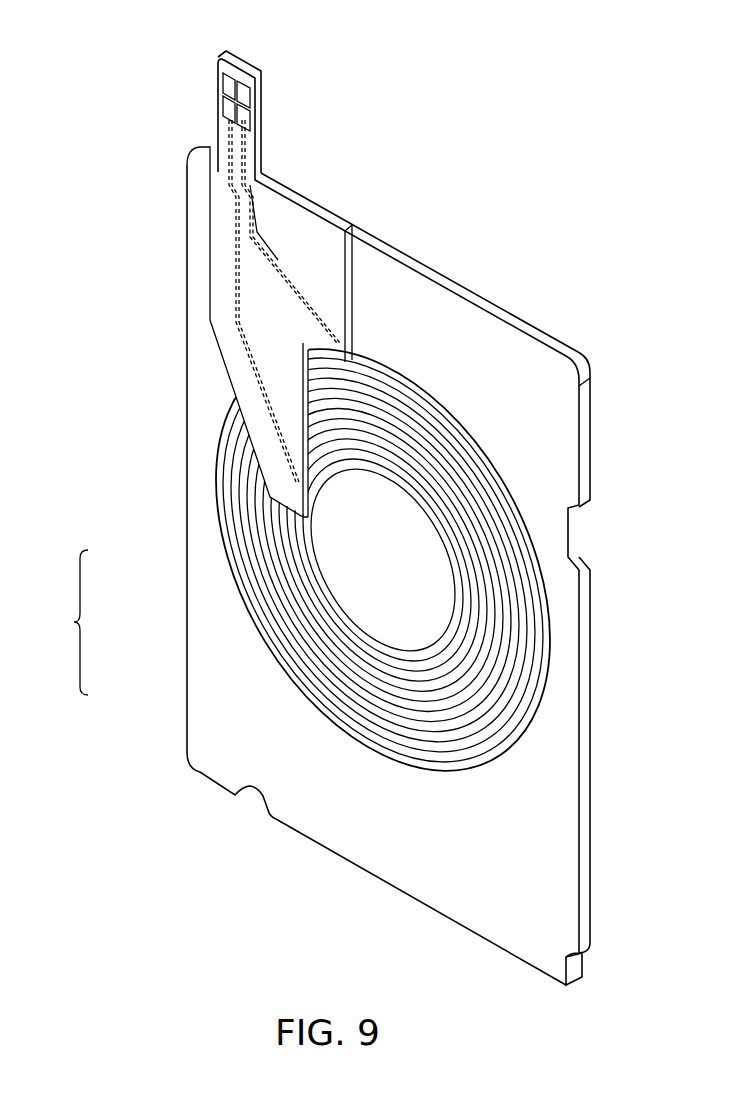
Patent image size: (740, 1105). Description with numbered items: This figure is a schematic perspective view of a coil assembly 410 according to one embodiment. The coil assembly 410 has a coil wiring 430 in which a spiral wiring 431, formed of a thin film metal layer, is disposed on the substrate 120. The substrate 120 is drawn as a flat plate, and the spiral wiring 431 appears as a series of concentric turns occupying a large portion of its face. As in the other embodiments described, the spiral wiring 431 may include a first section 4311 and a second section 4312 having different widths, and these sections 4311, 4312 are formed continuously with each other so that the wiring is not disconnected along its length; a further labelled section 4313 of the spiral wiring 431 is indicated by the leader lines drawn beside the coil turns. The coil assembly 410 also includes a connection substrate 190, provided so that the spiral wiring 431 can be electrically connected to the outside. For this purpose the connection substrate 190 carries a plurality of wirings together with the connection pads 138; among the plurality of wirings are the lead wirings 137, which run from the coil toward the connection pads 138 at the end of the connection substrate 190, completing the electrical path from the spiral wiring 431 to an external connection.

The substrate 120 is at (468, 327).
The coil assembly 410 is at (550, 104).
The lead wirings 137 is at (237, 320).
The connection pads 138 is at (235, 115).
The connection substrate 190 is at (309, 228).
The coil wiring 430 is at (389, 560).
The spiral wiring 431 is at (60, 622).
The first section 4311 is at (297, 576).
The second section 4312 is at (326, 587).
The third coil turn 4313 is at (326, 662).